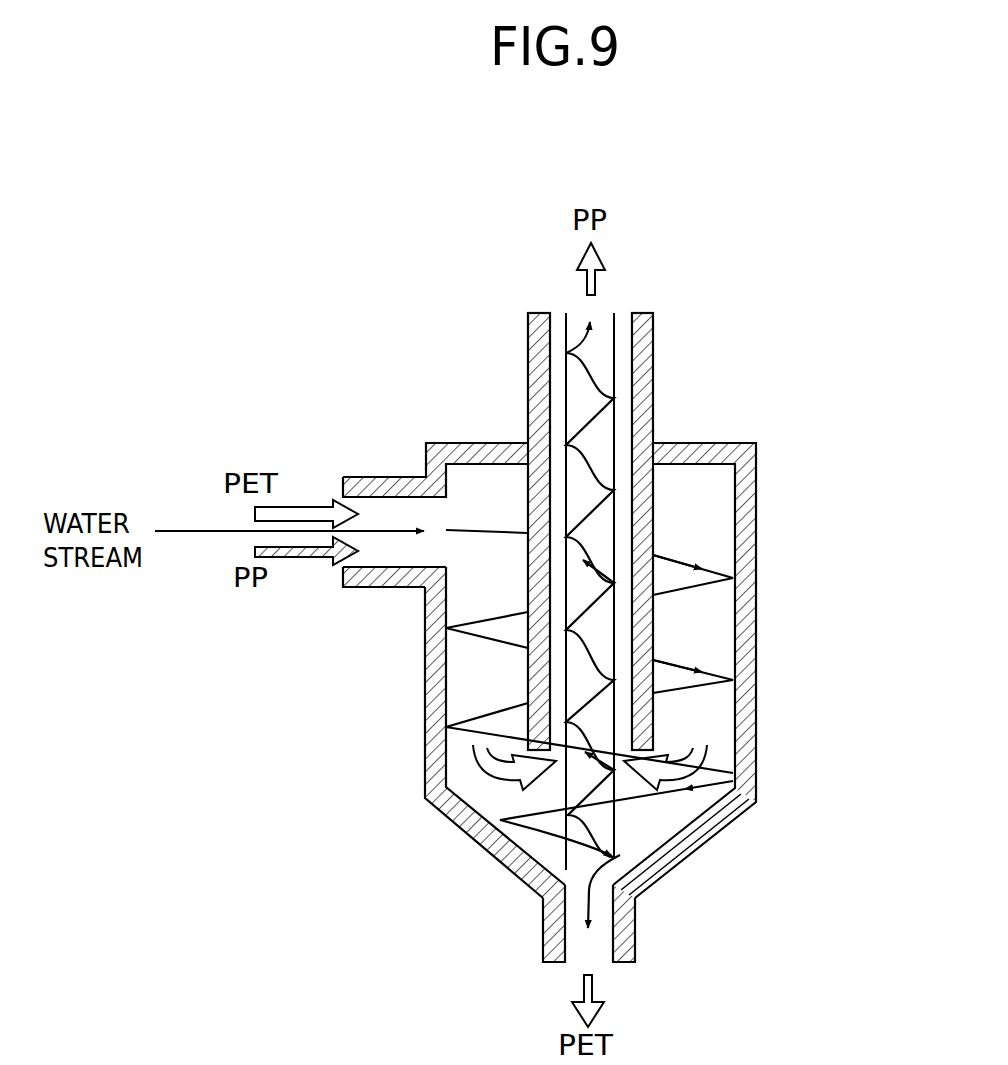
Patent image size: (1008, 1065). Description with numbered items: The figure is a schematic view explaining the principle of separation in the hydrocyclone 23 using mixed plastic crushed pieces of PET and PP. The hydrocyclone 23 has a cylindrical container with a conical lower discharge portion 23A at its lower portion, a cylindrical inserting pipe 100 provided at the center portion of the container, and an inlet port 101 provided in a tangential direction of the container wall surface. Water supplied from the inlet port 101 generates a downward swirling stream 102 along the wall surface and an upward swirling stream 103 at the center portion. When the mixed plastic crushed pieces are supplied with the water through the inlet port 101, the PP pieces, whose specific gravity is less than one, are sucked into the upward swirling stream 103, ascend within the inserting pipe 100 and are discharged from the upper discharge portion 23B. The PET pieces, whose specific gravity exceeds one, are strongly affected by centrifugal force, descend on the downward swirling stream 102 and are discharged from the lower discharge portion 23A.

The hydrocyclone 23 is at (765, 600).
The lower discharge portion 23A is at (543, 935).
The upper discharge portion 23B is at (528, 343).
The inserting pipe 100 is at (653, 500).
The inlet port 101 is at (385, 477).
The downward swirling stream 102 is at (720, 700).
The upward swirling stream 103 is at (567, 358).